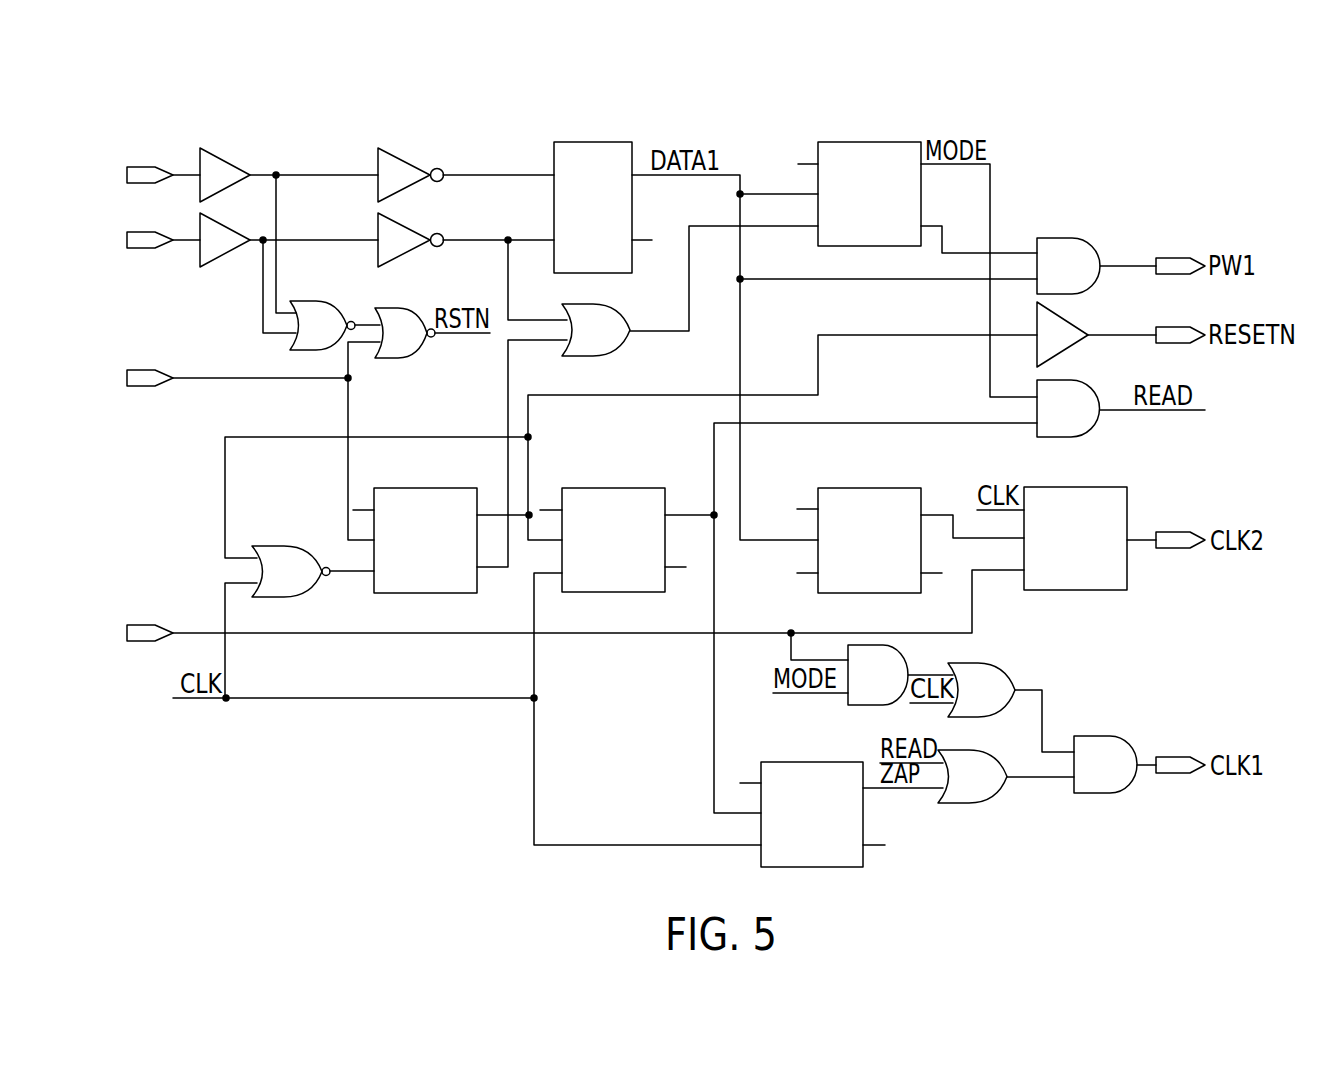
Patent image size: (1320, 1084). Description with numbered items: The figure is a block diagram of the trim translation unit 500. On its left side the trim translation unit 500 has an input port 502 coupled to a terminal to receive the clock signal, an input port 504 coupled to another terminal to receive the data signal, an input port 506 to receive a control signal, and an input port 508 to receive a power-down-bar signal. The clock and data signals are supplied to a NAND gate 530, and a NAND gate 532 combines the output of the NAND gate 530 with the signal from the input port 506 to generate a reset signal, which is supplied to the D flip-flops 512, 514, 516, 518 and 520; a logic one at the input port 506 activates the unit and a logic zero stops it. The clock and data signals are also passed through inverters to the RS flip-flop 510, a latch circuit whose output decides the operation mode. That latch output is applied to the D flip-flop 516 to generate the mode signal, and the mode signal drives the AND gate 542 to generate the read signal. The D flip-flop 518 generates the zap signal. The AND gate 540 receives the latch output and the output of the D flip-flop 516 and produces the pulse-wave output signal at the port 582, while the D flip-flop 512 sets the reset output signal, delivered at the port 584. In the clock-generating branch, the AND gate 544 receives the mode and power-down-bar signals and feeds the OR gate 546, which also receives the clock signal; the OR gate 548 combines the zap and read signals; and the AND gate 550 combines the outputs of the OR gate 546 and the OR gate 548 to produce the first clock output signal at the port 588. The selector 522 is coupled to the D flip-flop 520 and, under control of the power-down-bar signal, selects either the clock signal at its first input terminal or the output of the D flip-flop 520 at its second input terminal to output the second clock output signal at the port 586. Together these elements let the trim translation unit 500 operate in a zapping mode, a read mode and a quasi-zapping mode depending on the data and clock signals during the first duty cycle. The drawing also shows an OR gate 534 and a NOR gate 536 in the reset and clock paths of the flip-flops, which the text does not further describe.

The trim translation unit 500 is at (222, 128).
The input port 502 is at (140, 170).
The input port 504 is at (140, 235).
The input port 506 is at (140, 373).
The input port 508 is at (140, 628).
The RS flip-flop 510 is at (597, 142).
The D flip-flop 512 is at (418, 488).
The D flip-flop 514 is at (606, 488).
The D flip-flop 516 is at (862, 142).
The D flip-flop 518 is at (863, 805).
The D flip-flop 520 is at (862, 488).
The selector 522 is at (1068, 487).
The NAND gate 530 is at (330, 301).
The NAND gate 532 is at (392, 308).
The OR gate 534 is at (592, 356).
The NOR gate 536 is at (281, 546).
The AND gate 540 is at (1065, 238).
The AND gate 542 is at (1066, 380).
The AND gate 544 is at (853, 705).
The OR gate 546 is at (972, 663).
The OR gate 548 is at (975, 803).
The AND gate 550 is at (1090, 737).
The port 582 is at (1160, 259).
The port 584 is at (1160, 327).
The port 586 is at (1160, 532).
The port 588 is at (1160, 757).